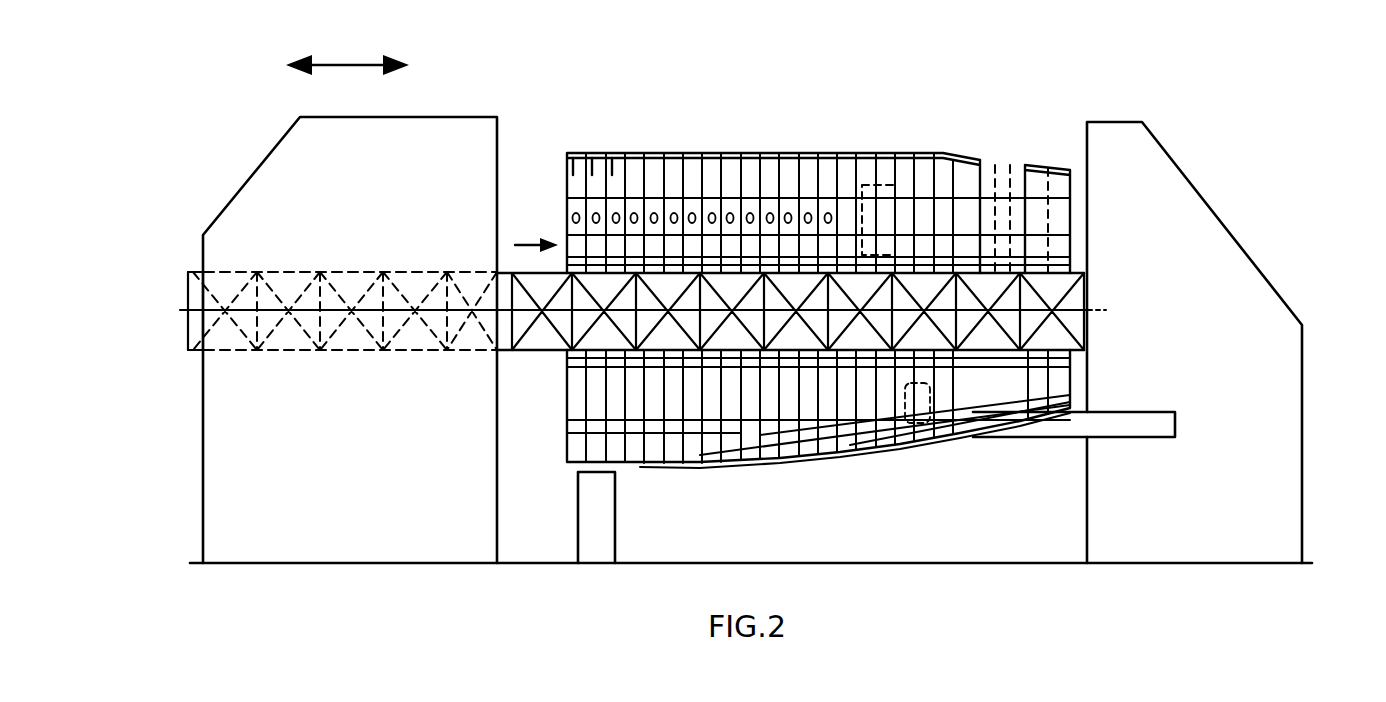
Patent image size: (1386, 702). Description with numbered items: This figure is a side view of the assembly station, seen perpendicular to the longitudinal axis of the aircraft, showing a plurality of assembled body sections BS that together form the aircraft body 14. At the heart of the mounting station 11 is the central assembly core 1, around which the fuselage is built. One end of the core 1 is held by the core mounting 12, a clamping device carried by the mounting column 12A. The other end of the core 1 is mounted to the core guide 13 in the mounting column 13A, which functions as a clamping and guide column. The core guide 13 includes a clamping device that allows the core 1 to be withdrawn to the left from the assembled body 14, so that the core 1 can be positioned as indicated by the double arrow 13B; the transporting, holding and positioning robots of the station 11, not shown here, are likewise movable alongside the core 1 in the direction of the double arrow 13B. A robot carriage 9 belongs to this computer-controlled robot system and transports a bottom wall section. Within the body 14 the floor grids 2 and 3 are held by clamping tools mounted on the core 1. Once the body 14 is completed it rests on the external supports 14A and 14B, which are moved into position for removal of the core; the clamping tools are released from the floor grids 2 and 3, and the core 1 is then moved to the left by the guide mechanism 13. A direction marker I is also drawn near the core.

The central assembly core 1 is at (536, 348).
The floor grid 2 is at (1064, 263).
The floor grid 3 is at (1075, 361).
The robot carriage 9 is at (878, 220).
The mounting station 11 is at (847, 288).
The core mounting 12 is at (1103, 313).
The mounting column 12A is at (1285, 349).
The core guide 13 is at (330, 354).
The clamping and guide column 13A is at (273, 178).
The double arrow 13B is at (347, 60).
The aircraft body 14 is at (800, 435).
The external support 14A is at (600, 523).
The external support 14B is at (1133, 432).
The body section BS is at (614, 158).
The section direction indicator I is at (522, 240).